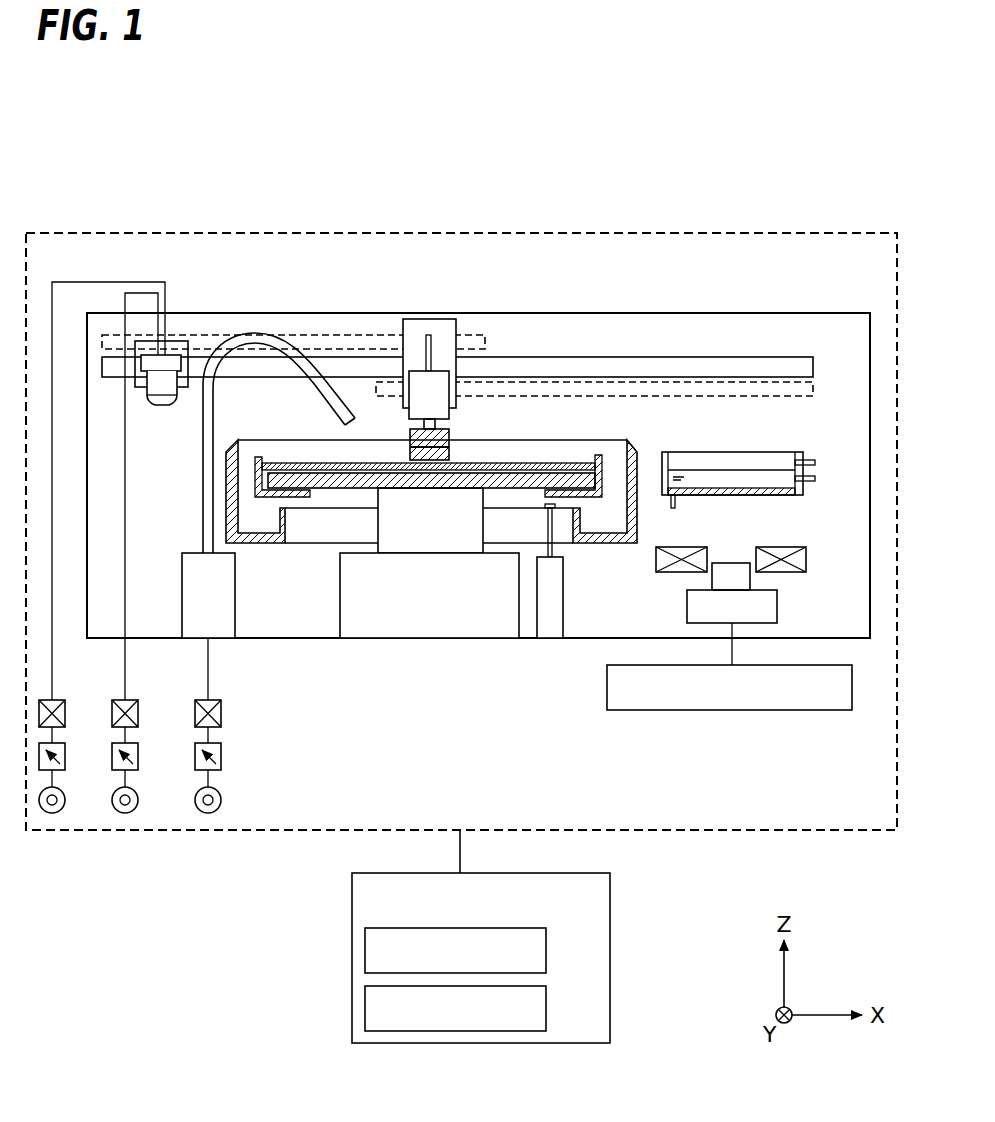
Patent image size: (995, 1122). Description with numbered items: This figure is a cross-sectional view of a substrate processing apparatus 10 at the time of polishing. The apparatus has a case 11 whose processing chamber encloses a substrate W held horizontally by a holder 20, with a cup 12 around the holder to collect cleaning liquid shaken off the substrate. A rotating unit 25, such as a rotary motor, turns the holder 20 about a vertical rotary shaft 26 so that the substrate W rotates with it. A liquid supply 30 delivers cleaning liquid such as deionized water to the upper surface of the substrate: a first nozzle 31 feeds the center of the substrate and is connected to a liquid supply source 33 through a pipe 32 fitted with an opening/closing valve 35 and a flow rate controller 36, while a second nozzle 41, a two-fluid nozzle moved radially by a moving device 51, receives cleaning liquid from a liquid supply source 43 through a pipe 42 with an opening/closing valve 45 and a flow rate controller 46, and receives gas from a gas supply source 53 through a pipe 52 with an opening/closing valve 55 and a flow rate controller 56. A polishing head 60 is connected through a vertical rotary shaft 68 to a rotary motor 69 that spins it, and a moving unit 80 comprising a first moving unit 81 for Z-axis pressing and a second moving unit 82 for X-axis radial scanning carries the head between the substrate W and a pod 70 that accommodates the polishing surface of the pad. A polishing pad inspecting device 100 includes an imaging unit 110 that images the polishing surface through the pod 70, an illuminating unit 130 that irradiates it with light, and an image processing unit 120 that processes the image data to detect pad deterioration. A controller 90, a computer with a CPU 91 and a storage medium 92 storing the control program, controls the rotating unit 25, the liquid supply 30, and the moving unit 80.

The substrate processing apparatus 10 is at (47, 210).
The case 11 is at (838, 312).
The cup 12 is at (640, 522).
The holder 20 is at (590, 502).
The rotating unit 25 is at (482, 645).
The rotary shaft 26 is at (420, 540).
The liquid supply 30 is at (240, 597).
The first nozzle 31 is at (322, 392).
The pipe 32 is at (210, 670).
The liquid supply source 33 is at (222, 798).
The opening/closing valve 35 is at (222, 713).
The flow rate controller 36 is at (222, 756).
The second nozzle 41 is at (161, 400).
The pipe 42 is at (127, 670).
The liquid supply source 43 is at (139, 798).
The opening/closing valve 45 is at (139, 713).
The flow rate controller 46 is at (139, 756).
The moving device 51 is at (313, 335).
The pipe 52 is at (54, 670).
The gas supply source 53 is at (66, 798).
The opening/closing valve 55 is at (66, 713).
The flow rate controller 56 is at (66, 756).
The polishing head 60 is at (456, 450).
The rotary shaft 68 is at (436, 424).
The rotary motor 69 is at (440, 405).
The pod 70 is at (812, 452).
The moving unit 80 is at (445, 278).
The first moving unit 81 is at (430, 335).
The second moving unit 82 is at (392, 382).
The controller 90 is at (612, 892).
The CPU 91 is at (548, 948).
The storage medium 92 is at (548, 1007).
The polishing pad inspecting device 100 is at (729, 723).
The imaging unit 110 is at (779, 605).
The image processing unit 120 is at (788, 712).
The illuminating unit 130 is at (808, 557).
The substrate W is at (582, 460).